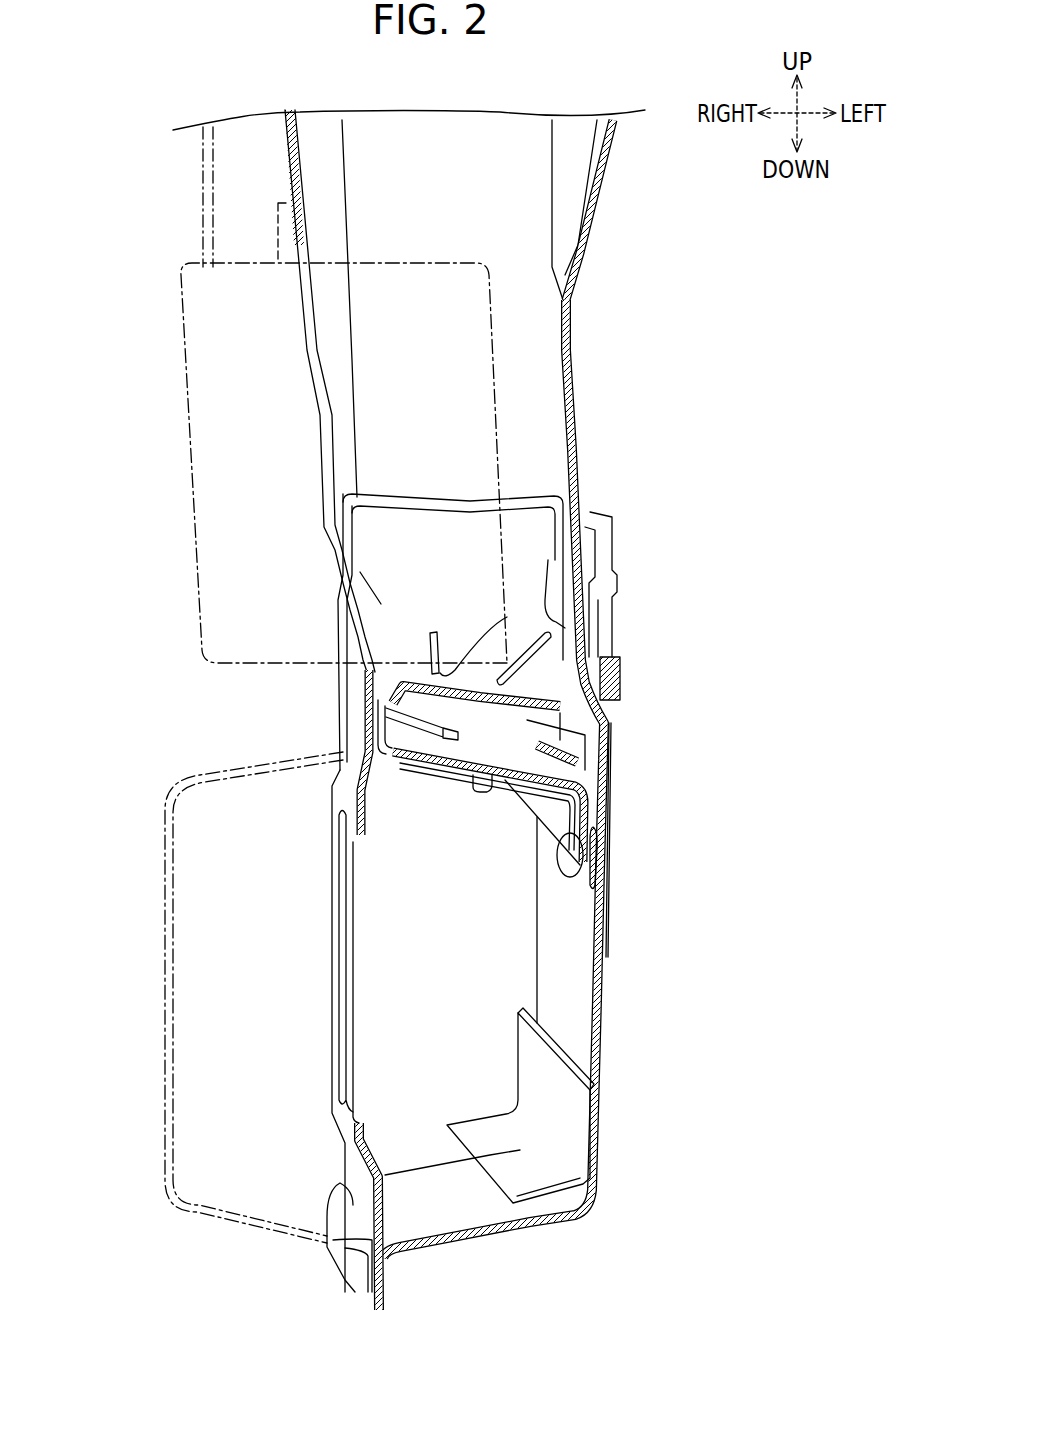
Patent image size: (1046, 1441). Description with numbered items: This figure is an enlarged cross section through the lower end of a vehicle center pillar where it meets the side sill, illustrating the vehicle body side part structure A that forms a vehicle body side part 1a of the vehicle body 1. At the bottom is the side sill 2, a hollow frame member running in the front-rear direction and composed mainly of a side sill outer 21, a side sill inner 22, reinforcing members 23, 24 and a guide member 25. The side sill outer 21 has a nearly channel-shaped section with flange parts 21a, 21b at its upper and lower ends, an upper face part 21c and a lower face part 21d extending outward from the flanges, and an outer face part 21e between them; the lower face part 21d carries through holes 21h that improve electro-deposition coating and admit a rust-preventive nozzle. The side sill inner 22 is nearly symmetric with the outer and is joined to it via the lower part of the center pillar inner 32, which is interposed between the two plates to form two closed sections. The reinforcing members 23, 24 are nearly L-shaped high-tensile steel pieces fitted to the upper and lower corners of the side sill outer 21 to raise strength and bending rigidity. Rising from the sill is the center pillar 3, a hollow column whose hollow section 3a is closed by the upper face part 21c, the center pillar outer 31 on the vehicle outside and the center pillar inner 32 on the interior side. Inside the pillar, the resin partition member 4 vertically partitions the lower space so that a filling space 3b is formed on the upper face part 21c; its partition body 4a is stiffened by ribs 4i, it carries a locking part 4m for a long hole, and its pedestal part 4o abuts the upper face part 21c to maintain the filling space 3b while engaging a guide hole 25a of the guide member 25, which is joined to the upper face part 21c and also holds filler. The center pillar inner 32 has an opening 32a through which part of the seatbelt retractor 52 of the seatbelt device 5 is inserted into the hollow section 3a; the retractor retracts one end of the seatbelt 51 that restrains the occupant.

The vehicle body 1 is at (631, 173).
The vehicle body side part 1a is at (603, 193).
The side sill 2 is at (650, 1195).
The center pillar 3 is at (631, 309).
The hollow section 3a is at (465, 385).
The filling space 3b is at (608, 740).
The center pillar outer 31 is at (572, 355).
The center pillar inner 32 is at (285, 153).
The opening 32a is at (326, 352).
The partition member 4 is at (495, 490).
The partition body 4a is at (507, 617).
The rib 4i is at (400, 655).
The pedestal part 4o is at (622, 665).
The locking part for a long hole 4m is at (483, 792).
The seatbelt device 5 is at (117, 413).
The seatbelt 51 is at (203, 187).
The seatbelt retractor 52 is at (190, 493).
The side sill outer 21 is at (598, 1068).
The flange part 21a is at (395, 733).
The flange part 21b is at (392, 1280).
The upper face part 21c is at (418, 742).
The lower face part 21d is at (425, 1252).
The outer face part 21e is at (600, 1000).
The through hole 21h is at (455, 1243).
The side sill inner 22 is at (165, 873).
The reinforcing member 23 is at (610, 864).
The reinforcing member 24 is at (560, 1123).
The guide member 25 is at (430, 698).
The guide hole 25a is at (605, 713).
The vehicle body side part structure A is at (702, 569).